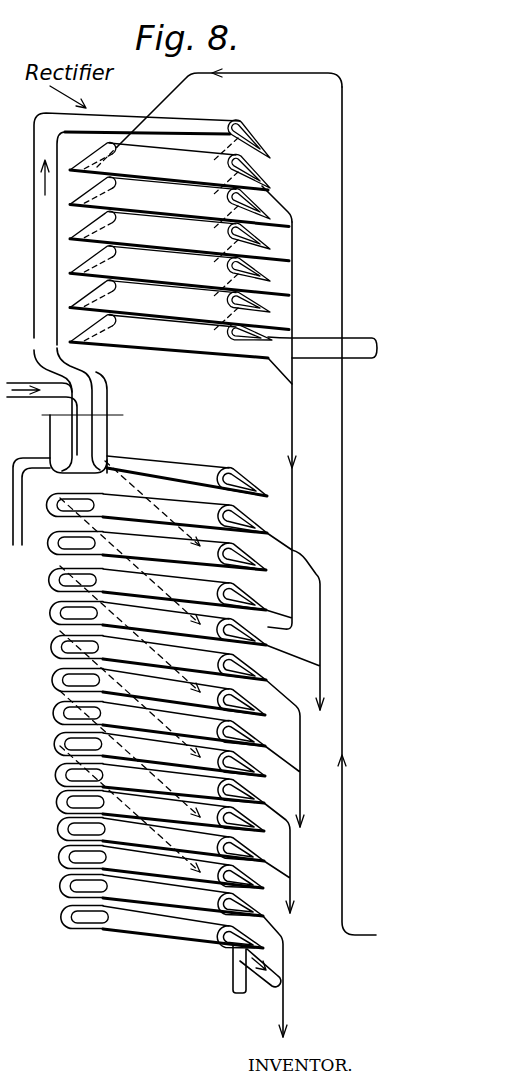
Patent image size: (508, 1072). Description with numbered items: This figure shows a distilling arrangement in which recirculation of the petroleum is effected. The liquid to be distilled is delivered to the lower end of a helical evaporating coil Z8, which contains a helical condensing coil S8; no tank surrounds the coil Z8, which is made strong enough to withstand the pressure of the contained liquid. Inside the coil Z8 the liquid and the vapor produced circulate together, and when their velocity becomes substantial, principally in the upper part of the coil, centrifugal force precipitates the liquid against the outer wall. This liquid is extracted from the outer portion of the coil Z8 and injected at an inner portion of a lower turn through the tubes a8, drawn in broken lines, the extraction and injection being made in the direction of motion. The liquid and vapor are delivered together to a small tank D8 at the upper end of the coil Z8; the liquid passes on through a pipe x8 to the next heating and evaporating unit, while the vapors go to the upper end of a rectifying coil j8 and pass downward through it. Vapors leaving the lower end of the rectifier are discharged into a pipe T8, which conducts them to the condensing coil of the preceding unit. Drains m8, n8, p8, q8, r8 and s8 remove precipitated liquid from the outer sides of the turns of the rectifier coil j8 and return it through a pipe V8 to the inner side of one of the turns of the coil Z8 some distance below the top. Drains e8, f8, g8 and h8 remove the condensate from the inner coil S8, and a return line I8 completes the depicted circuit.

The rectifying coil j8 is at (204, 116).
The drain m8 is at (282, 200).
The drain n8 is at (293, 225).
The drain p8 is at (292, 267).
The drain q8 is at (280, 302).
The drain r8 is at (272, 332).
The drain s8 is at (270, 365).
The pipe T8 is at (312, 353).
The pipe V8 is at (293, 427).
The return conduit I8 is at (343, 625).
The small tank D8 is at (110, 432).
The pipe x8 is at (18, 507).
The helical evaporating coil Z8 is at (192, 468).
The helical condensing coil S8 is at (240, 478).
The tubes a8 is at (163, 513).
The drain e8 is at (317, 665).
The drain f8 is at (302, 793).
The drain g8 is at (294, 858).
The drain h8 is at (285, 995).